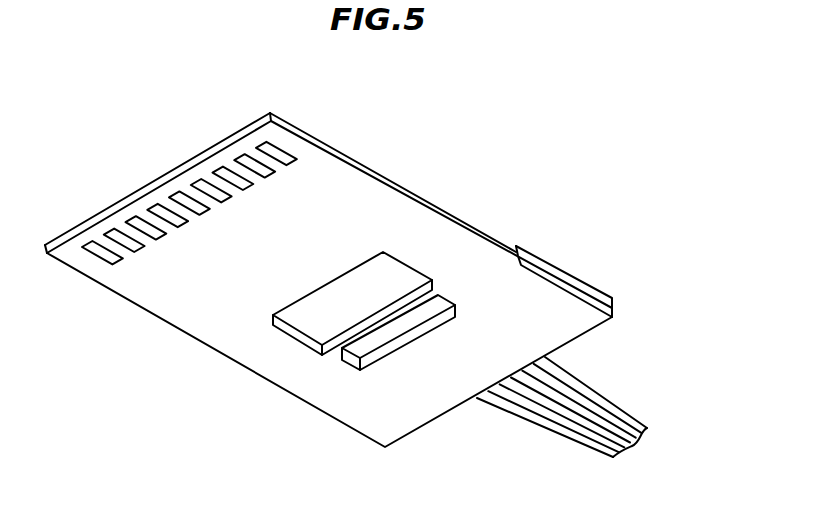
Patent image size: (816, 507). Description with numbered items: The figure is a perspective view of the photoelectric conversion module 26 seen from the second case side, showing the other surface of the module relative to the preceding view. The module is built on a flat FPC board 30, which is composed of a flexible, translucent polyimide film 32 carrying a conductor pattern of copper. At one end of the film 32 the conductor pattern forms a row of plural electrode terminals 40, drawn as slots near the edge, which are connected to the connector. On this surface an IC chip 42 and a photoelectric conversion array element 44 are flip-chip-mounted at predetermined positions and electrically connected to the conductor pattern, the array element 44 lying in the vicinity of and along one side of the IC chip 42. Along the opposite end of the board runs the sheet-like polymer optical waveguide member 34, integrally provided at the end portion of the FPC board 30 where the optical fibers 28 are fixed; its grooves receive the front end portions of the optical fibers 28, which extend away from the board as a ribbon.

The photoelectric conversion module 26 is at (478, 150).
The optical fiber 28 is at (610, 398).
The FPC board 30 is at (327, 142).
The film 32 is at (380, 175).
The polymer optical waveguide member 34 is at (577, 278).
The electrode terminals 40 is at (170, 197).
The IC chip 42 is at (310, 335).
The photoelectric conversion array element 44 is at (362, 363).